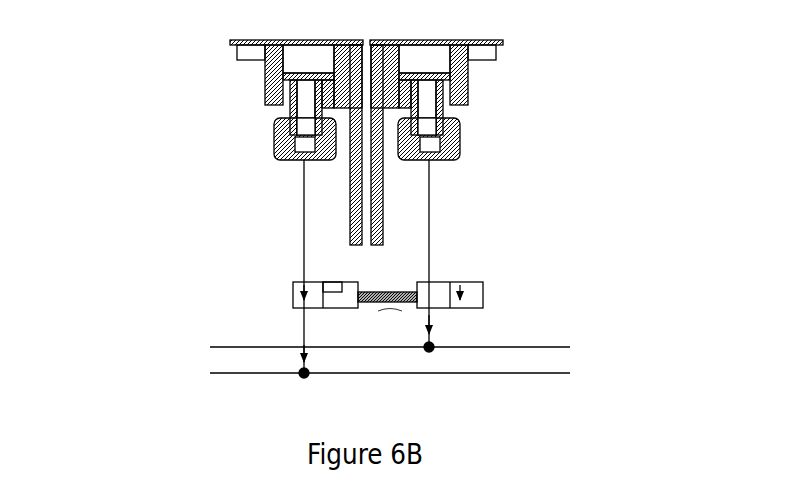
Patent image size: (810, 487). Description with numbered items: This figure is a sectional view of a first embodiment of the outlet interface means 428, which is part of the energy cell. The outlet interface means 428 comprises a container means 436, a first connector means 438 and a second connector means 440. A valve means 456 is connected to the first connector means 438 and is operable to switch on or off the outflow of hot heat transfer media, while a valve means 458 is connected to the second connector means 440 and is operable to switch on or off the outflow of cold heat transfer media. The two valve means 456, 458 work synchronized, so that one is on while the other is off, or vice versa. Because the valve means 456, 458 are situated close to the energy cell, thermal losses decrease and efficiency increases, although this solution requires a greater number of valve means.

The outlet interface means 428 is at (478, 86).
The container means 436 is at (300, 61).
The first connector means 438 is at (271, 158).
The second connector means 440 is at (470, 157).
The valve means 456 is at (284, 293).
The valve means 458 is at (502, 292).